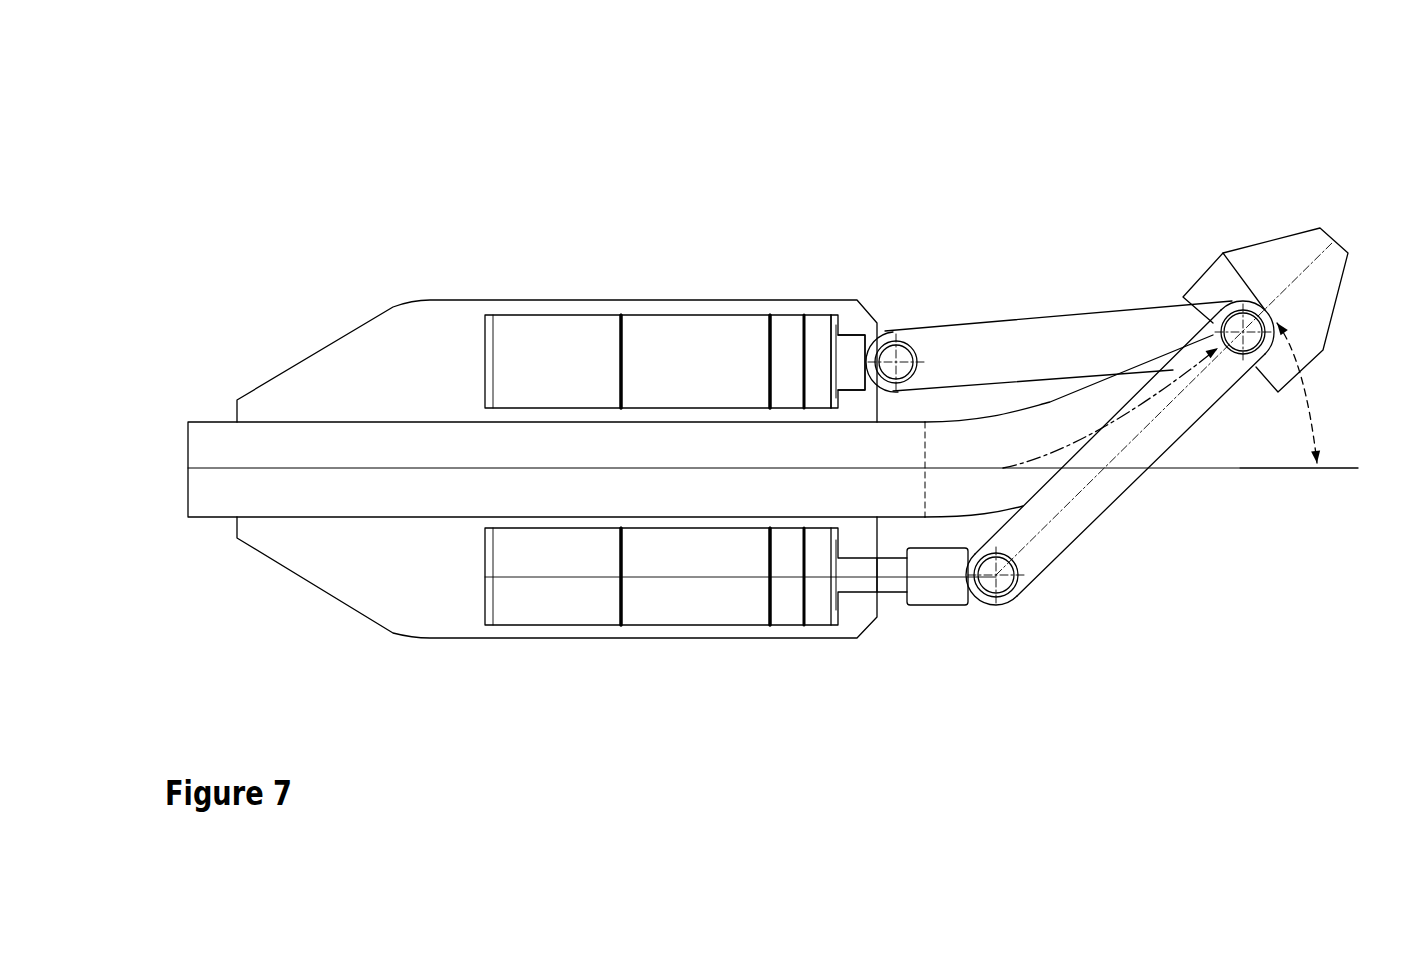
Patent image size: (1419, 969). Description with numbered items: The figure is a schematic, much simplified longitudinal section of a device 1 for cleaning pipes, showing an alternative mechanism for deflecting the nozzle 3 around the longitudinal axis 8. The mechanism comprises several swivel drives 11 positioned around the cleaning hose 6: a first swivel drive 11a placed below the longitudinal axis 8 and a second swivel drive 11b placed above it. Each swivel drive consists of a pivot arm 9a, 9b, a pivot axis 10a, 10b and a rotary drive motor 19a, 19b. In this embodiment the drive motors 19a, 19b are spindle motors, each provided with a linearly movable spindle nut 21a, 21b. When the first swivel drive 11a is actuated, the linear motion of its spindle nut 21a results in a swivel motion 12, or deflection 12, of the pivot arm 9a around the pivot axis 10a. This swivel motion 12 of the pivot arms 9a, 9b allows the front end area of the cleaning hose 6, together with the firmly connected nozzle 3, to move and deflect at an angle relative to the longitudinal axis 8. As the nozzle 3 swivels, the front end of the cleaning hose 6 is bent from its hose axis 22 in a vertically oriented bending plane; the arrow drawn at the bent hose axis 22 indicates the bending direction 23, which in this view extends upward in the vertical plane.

The device for cleaning pipes 1 is at (378, 212).
The nozzle 3 is at (1275, 265).
The cleaning hose 6 is at (211, 433).
The longitudinal axis 8 is at (1332, 468).
The pivot arm 9a is at (1095, 502).
The pivot arm 9b is at (934, 337).
The pivot axis 10a is at (996, 575).
The pivot axis 10b is at (896, 362).
The swivel drive 11 is at (557, 442).
The first swivel drive 11a is at (1022, 760).
The second swivel drive 11b is at (742, 105).
The swivel motion 12 is at (1309, 421).
The rotary drive motor 19a is at (653, 600).
The rotary drive motor 19b is at (680, 343).
The spindle nut 21a is at (927, 590).
The spindle nut 21b is at (855, 353).
The hose axis 22 is at (1158, 395).
The bending direction 23 is at (1220, 348).